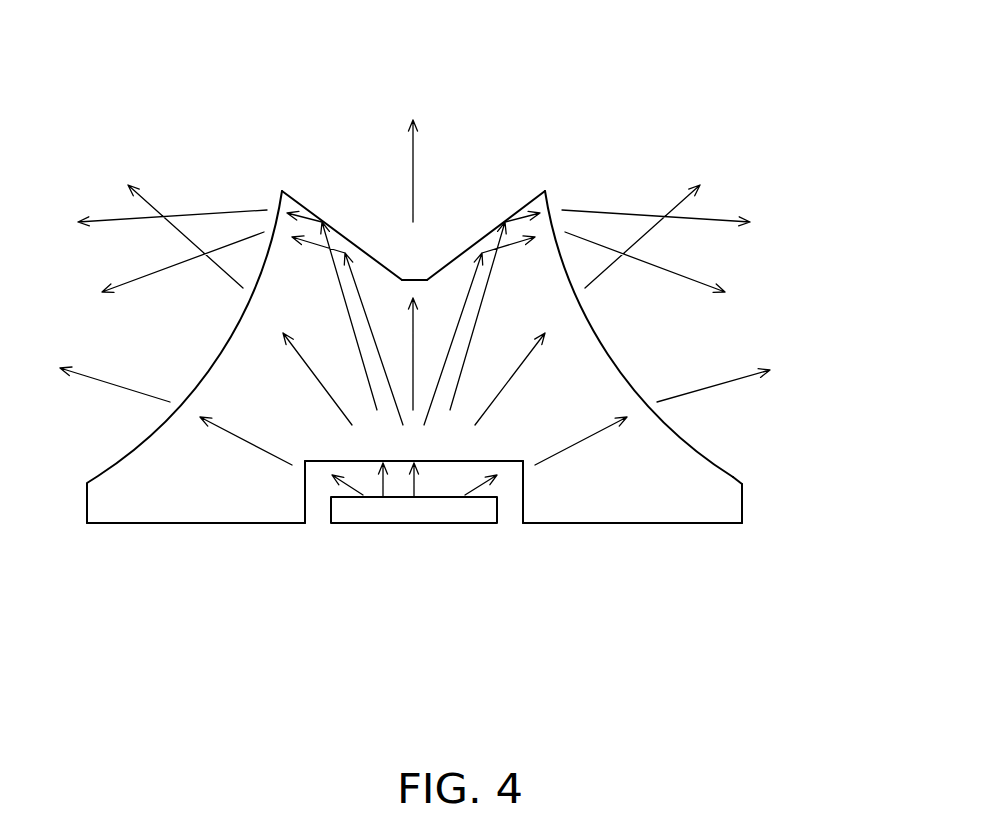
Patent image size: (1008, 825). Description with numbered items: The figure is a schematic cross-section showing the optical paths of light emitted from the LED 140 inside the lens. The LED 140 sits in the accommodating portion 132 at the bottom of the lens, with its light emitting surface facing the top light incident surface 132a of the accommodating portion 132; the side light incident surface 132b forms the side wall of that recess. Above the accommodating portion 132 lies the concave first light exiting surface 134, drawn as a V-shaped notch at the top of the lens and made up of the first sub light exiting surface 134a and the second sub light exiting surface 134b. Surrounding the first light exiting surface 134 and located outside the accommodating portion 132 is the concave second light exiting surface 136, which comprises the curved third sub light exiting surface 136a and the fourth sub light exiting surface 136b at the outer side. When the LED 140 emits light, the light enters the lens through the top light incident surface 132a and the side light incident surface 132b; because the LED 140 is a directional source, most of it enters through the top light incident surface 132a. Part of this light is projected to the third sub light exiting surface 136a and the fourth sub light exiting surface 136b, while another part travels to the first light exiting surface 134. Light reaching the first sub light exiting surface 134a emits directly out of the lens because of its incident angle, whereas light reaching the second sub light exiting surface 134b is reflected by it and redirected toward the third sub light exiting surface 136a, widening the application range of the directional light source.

The accommodating portion 132 is at (410, 568).
The top light incident surface 132a is at (387, 473).
The side light incident surface 132b is at (318, 542).
The first light exiting surface 134 is at (413, 147).
The first sub light exiting surface 134a is at (403, 270).
The second sub light exiting surface 134b is at (444, 246).
The second light exiting surface 136 is at (714, 357).
The third sub light exiting surface 136a is at (634, 370).
The fourth sub light exiting surface 136b is at (754, 499).
The LED 140 is at (453, 510).